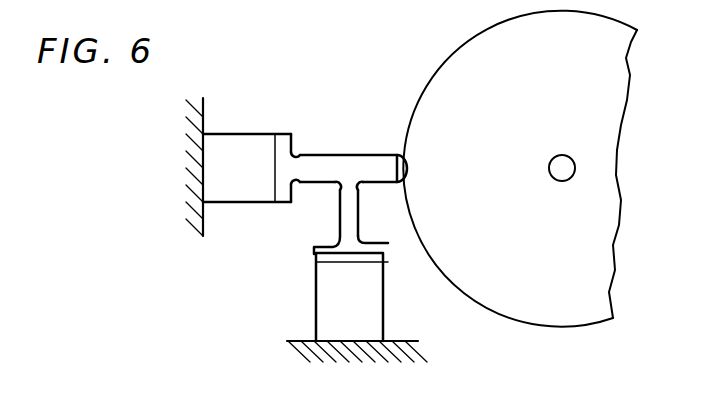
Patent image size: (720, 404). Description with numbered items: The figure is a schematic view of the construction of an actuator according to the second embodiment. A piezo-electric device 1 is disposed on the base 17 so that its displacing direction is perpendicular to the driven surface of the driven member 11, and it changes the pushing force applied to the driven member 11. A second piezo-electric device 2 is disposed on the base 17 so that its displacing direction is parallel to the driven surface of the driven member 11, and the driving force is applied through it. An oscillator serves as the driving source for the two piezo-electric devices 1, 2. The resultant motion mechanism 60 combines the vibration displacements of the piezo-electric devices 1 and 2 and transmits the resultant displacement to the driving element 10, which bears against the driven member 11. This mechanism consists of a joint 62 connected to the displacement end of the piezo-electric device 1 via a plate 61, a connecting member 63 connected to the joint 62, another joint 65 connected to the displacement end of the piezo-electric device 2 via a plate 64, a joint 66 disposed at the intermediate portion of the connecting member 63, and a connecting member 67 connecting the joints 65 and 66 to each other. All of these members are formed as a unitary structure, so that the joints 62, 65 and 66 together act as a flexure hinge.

The piezo-electric device 1 is at (247, 134).
The piezo-electric device 2 is at (317, 307).
The driving element 10 is at (403, 155).
The driven member 11 is at (447, 61).
The base 17 is at (190, 218).
The resultant motion mechanism 60 is at (326, 192).
The plate 61 is at (283, 134).
The joint 62 is at (298, 152).
The connecting member 63 is at (352, 163).
The plate 64 is at (388, 262).
The joint 65 is at (388, 243).
The joint 66 is at (364, 190).
The connecting member 67 is at (338, 220).